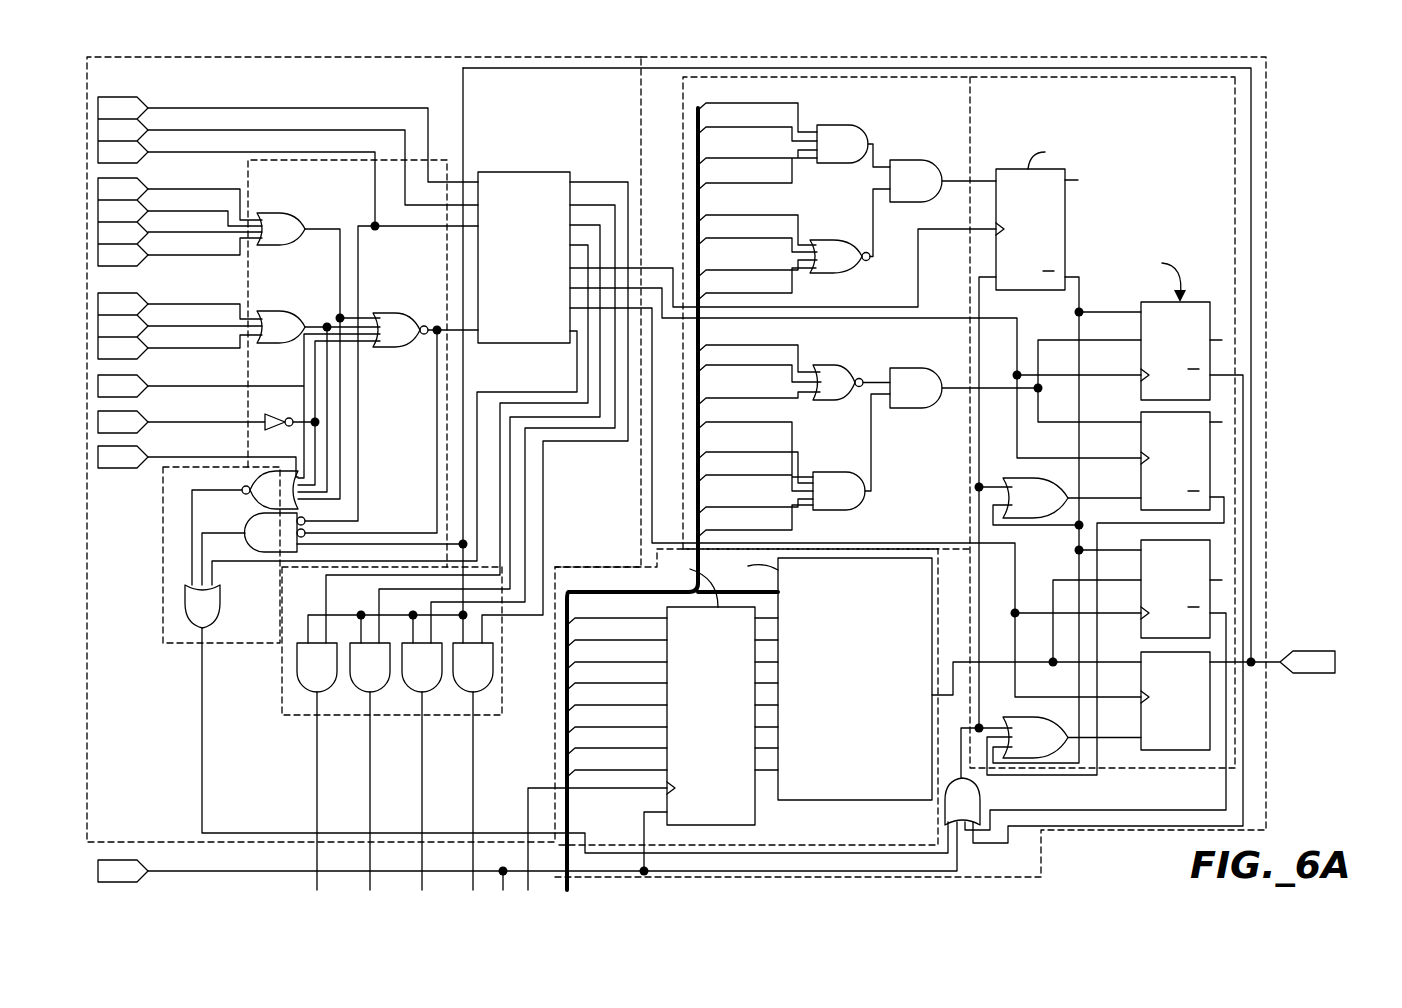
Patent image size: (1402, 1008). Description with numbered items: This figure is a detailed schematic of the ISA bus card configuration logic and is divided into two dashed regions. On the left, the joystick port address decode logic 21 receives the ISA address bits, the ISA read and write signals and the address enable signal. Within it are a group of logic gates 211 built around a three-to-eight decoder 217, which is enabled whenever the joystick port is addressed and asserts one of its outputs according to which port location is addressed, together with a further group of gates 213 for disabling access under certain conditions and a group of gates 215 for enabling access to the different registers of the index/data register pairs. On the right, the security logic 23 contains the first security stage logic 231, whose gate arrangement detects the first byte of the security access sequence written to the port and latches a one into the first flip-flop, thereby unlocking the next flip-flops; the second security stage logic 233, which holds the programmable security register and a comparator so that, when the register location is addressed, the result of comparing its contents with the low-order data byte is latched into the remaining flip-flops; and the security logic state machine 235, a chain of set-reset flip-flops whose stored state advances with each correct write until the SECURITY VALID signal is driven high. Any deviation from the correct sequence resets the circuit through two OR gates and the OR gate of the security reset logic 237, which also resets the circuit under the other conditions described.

The joystick port address decode logic 21 is at (105, 58).
The address decoder circuit 211 is at (440, 160).
The read/write control logic 213 is at (163, 552).
The port select AND gate array 215 is at (282, 700).
The 3-to-8 decoder 217 is at (528, 172).
The security logic 23 is at (1266, 72).
The first security stage logic 231 is at (683, 115).
The second security stage logic 233 is at (655, 585).
The security logic state machine 235 is at (1235, 115).
The security reset logic 237 is at (975, 800).